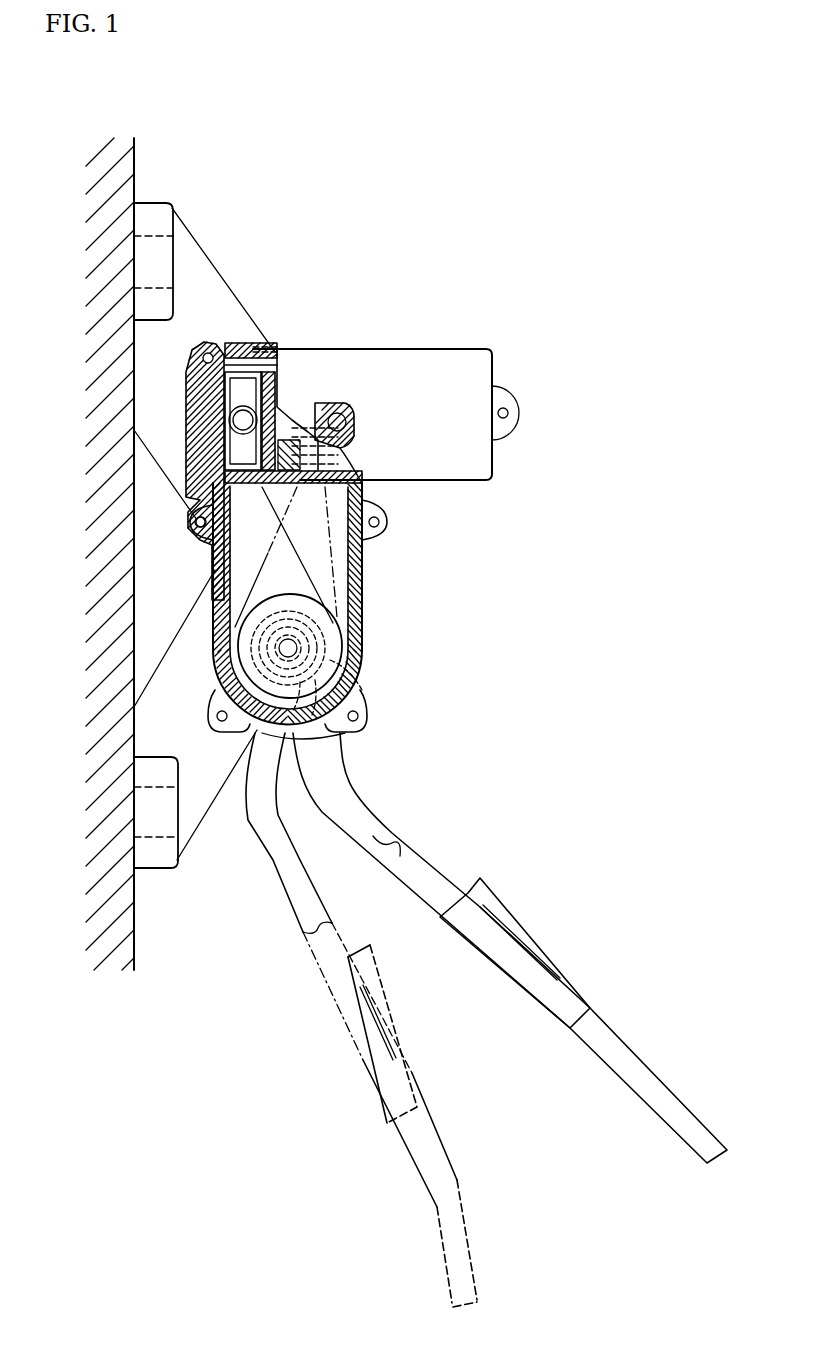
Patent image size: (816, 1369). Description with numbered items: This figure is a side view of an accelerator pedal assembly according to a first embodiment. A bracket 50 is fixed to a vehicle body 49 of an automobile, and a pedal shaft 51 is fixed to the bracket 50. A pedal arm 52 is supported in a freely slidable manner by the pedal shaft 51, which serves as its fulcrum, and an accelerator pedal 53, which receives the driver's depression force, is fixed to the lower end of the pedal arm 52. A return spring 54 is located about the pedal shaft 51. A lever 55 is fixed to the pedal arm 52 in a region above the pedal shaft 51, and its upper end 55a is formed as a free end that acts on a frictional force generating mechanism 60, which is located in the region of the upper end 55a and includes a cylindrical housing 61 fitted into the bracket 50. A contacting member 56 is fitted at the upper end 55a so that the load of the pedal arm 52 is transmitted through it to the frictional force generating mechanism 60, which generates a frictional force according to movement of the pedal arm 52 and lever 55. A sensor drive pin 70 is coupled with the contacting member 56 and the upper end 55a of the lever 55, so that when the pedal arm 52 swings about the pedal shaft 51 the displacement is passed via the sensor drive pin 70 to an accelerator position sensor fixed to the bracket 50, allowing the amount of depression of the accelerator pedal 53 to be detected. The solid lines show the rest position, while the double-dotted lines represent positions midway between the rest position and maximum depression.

The vehicle body 49 is at (121, 361).
The bracket 50 is at (190, 272).
The pedal shaft 51 is at (289, 646).
The pedal arm 52 is at (508, 952).
The accelerator pedal 53 is at (625, 1032).
The return spring 54 is at (345, 665).
The lever 55 is at (247, 558).
The upper end 55a is at (258, 443).
The contacting member 56 is at (236, 356).
The frictional force generating mechanism 60 is at (375, 348).
The housing 61 is at (190, 407).
The sensor drive pin 70 is at (246, 358).